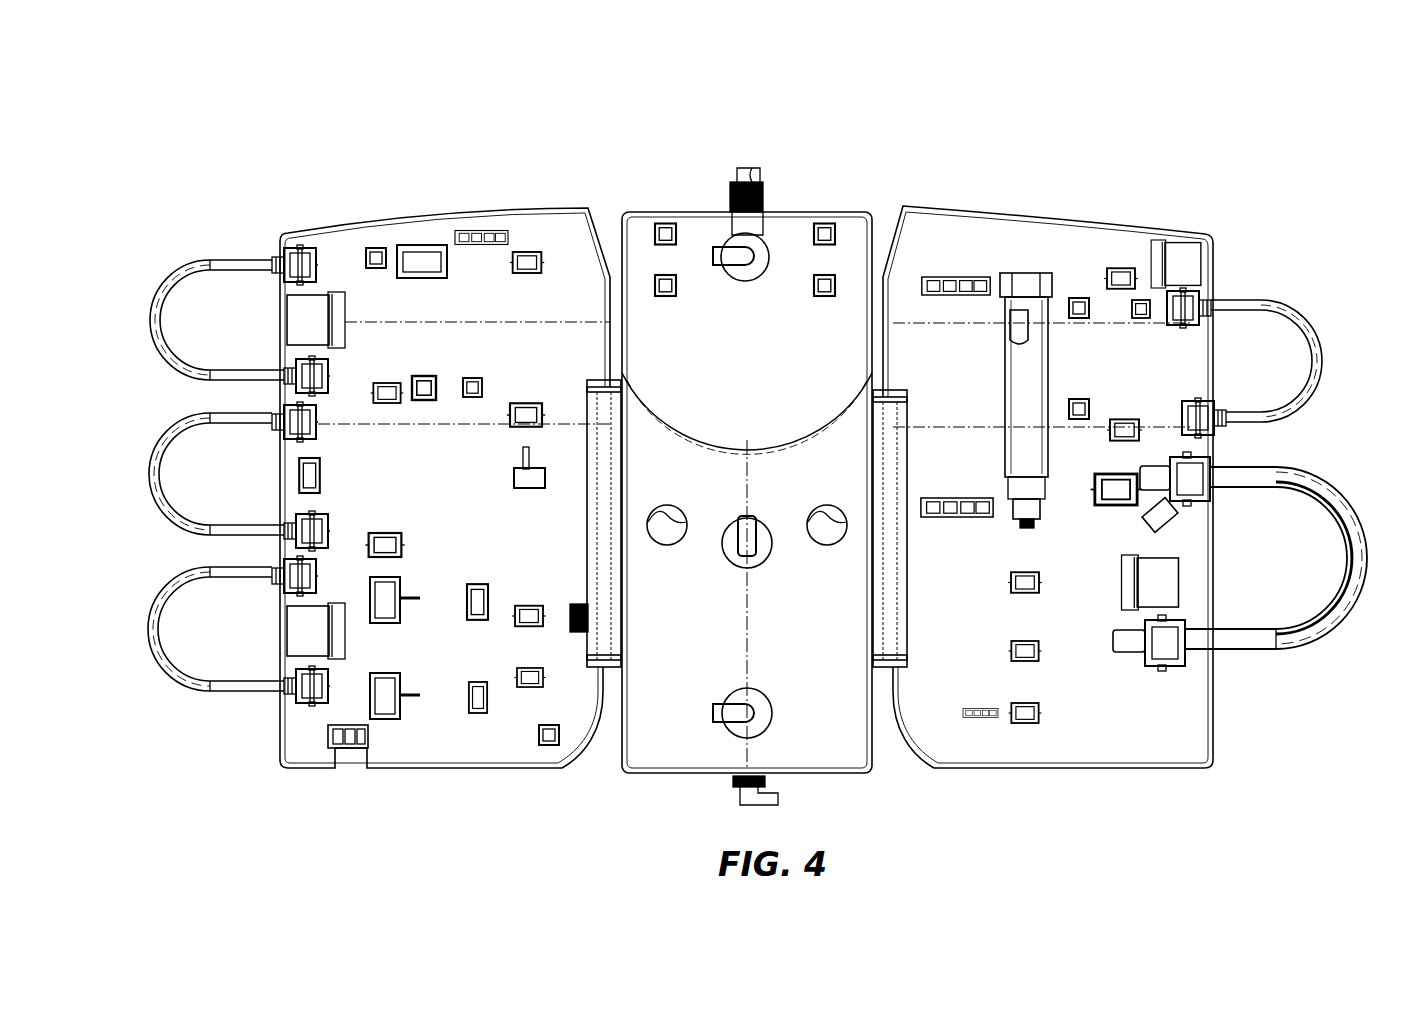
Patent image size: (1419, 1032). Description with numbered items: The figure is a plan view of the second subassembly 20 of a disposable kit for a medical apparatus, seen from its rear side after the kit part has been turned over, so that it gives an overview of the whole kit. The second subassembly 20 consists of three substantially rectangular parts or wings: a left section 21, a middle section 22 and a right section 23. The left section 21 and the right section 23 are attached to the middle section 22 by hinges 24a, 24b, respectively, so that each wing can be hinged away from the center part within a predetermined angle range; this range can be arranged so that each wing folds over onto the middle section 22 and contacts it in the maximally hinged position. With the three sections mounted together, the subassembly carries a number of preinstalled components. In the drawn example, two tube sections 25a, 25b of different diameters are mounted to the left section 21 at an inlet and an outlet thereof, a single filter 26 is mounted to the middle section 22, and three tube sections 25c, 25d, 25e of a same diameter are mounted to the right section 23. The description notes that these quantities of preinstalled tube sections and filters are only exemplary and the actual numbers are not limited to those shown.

The second subassembly 20 is at (1012, 170).
The left section 21 is at (1107, 219).
The middle section 22 is at (812, 211).
The right section 23 is at (380, 217).
The hinge 24a is at (617, 632).
The hinge 24b is at (880, 632).
The tube section 25a is at (1290, 308).
The tube section 25b is at (1288, 474).
The tube section 25c is at (200, 264).
The tube section 25d is at (200, 420).
The tube section 25e is at (200, 573).
The filter 26 is at (729, 191).